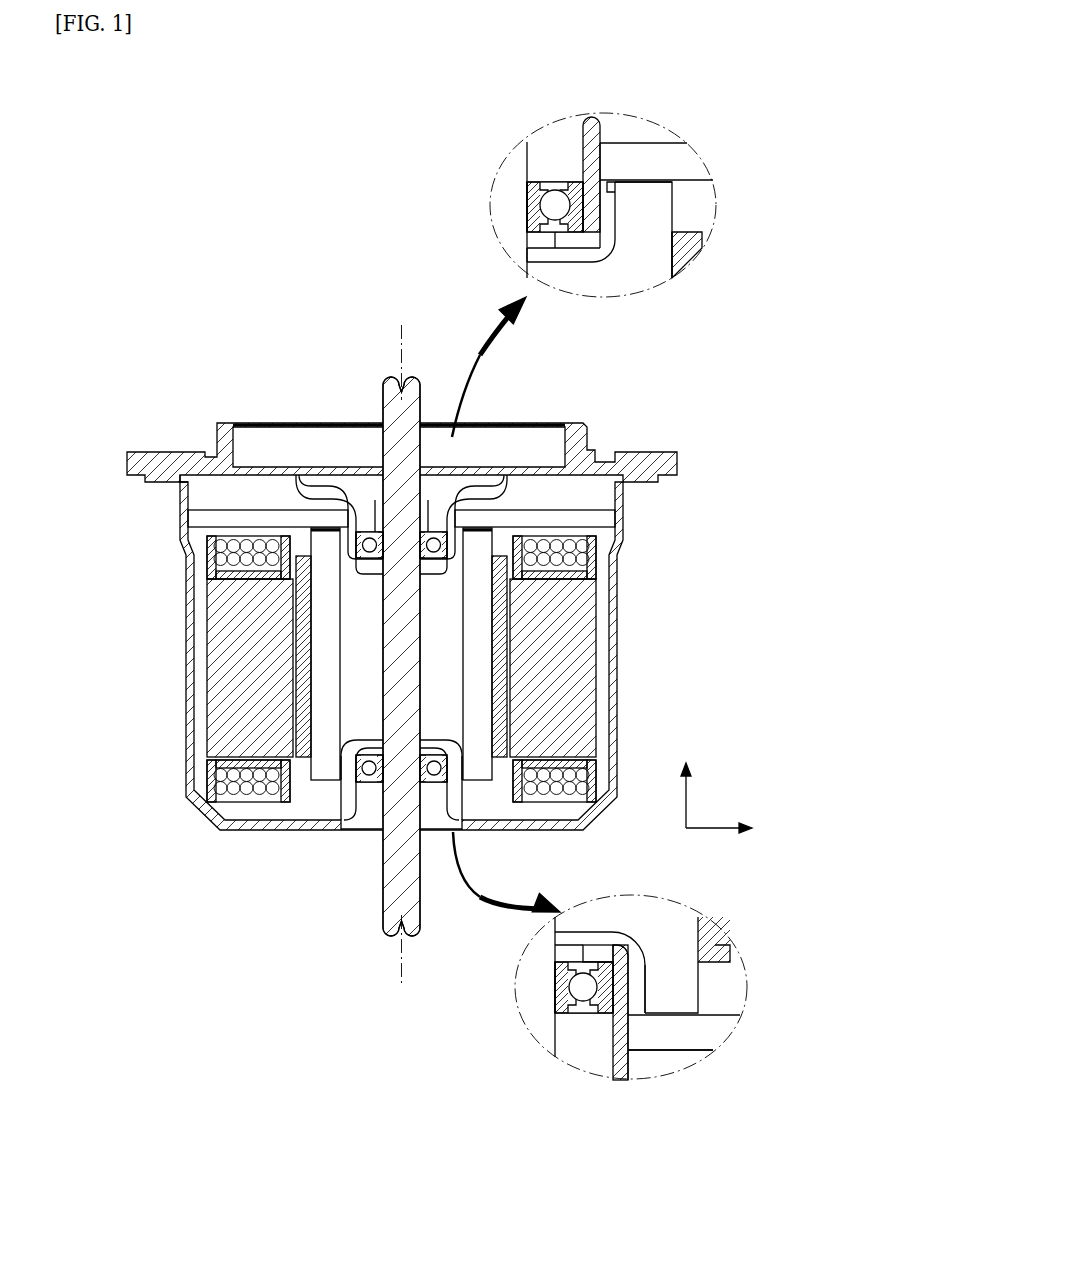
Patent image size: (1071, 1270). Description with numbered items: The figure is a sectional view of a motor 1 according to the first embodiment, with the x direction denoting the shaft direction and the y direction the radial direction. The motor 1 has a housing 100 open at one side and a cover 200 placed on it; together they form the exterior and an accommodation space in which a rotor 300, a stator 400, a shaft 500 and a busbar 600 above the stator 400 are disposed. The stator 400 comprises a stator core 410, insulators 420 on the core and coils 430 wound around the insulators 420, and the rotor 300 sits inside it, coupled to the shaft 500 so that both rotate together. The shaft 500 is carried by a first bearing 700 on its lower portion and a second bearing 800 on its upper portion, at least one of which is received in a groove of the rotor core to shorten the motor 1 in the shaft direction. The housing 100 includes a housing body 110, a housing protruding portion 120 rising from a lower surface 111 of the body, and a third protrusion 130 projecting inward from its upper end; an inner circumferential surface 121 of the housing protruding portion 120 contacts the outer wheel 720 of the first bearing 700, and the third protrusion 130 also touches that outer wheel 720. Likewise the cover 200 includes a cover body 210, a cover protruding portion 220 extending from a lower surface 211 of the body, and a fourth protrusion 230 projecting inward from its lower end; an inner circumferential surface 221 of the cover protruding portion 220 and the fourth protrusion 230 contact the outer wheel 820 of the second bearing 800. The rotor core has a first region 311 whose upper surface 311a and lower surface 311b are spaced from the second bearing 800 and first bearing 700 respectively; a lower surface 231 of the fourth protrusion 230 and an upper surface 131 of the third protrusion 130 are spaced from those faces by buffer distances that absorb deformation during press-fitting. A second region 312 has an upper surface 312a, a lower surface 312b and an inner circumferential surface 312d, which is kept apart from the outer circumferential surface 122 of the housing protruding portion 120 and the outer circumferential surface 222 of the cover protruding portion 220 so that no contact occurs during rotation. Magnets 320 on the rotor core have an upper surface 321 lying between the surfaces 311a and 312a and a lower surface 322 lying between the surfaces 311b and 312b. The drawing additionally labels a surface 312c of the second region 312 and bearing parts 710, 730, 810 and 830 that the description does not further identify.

The motor 1 is at (61, 327).
The housing 100 is at (258, 901).
The housing body 110 is at (252, 831).
The lower surface 111 is at (690, 1052).
The housing protruding portion 120 is at (348, 805).
The inner circumferential surface 121 is at (603, 1010).
The outer circumferential surface 122 is at (620, 1048).
The third protrusion 130 is at (345, 800).
The upper surface 131 is at (617, 952).
The cover 200 is at (243, 328).
The cover body 210 is at (258, 468).
The lower surface 211 is at (200, 483).
The cover protruding portion 220 is at (345, 505).
The inner circumferential surface 221 is at (580, 170).
The outer circumferential surface 222 is at (612, 137).
The fourth protrusion 230 is at (352, 560).
The lower surface 231 is at (582, 248).
The rotor 300 is at (358, 660).
The first region 311 is at (550, 278).
The upper surface 311a is at (550, 258).
The lower surface 311b is at (557, 947).
The second region 312 is at (652, 215).
The upper surface 312a is at (653, 180).
The lower surface 312b is at (700, 1028).
The rotor core side surface 312c is at (700, 177).
The inner circumferential surface 312d is at (617, 143).
The magnet 320 is at (697, 257).
The upper surface 321 is at (687, 227).
The lower surface 322 is at (717, 967).
The stator 400 is at (733, 557).
The stator core 410 is at (600, 628).
The insulator 420 is at (600, 572).
The coil 430 is at (600, 540).
The shaft 500 is at (387, 915).
The busbar 600 is at (200, 520).
The first bearing 700 is at (432, 1077).
The lower bearing outer race 710 is at (557, 1003).
The outer wheel 720 is at (600, 1010).
The lower bearing ball 730 is at (582, 990).
The second bearing 800 is at (487, 96).
The upper bearing outer race 810 is at (525, 197).
The outer wheel 820 is at (578, 182).
The upper bearing ball 830 is at (555, 205).